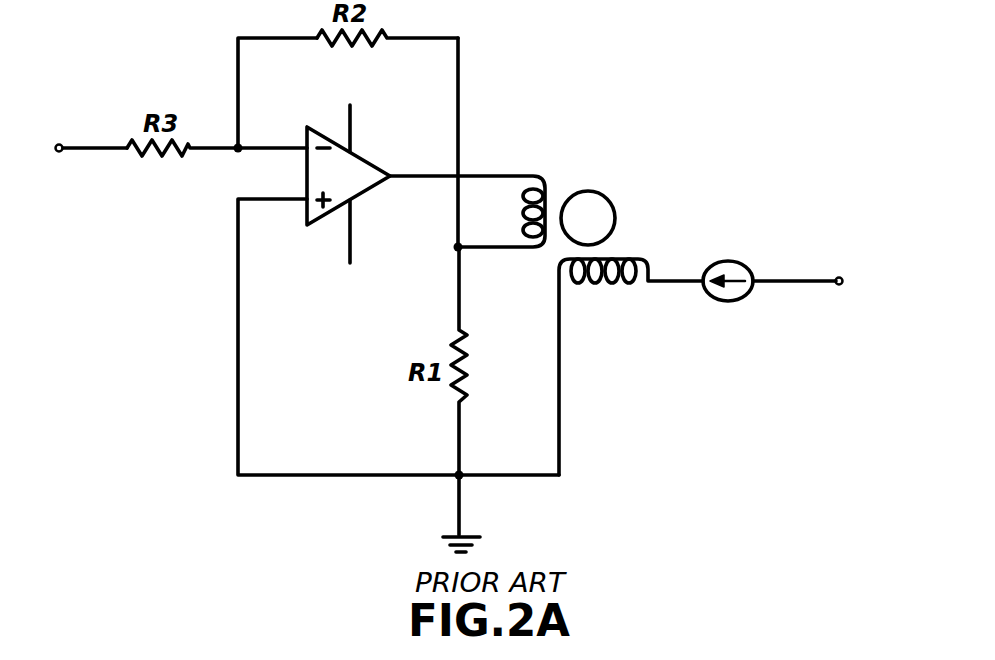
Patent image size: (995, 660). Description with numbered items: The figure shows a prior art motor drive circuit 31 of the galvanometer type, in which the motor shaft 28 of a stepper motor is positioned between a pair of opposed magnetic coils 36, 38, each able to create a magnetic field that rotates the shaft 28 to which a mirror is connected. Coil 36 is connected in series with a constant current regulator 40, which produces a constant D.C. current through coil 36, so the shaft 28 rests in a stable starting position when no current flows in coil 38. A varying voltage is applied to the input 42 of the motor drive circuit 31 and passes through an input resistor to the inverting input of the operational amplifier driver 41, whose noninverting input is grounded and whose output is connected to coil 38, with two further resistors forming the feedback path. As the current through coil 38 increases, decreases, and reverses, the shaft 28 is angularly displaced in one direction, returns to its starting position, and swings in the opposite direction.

The input 42 is at (100, 152).
The operational amplifier driver 41 is at (362, 183).
The coil 38 is at (541, 174).
The motor shaft 28 is at (592, 206).
The coil 36 is at (633, 274).
The constant current regulator 40 is at (742, 264).
The motor drive circuit 31 is at (183, 297).